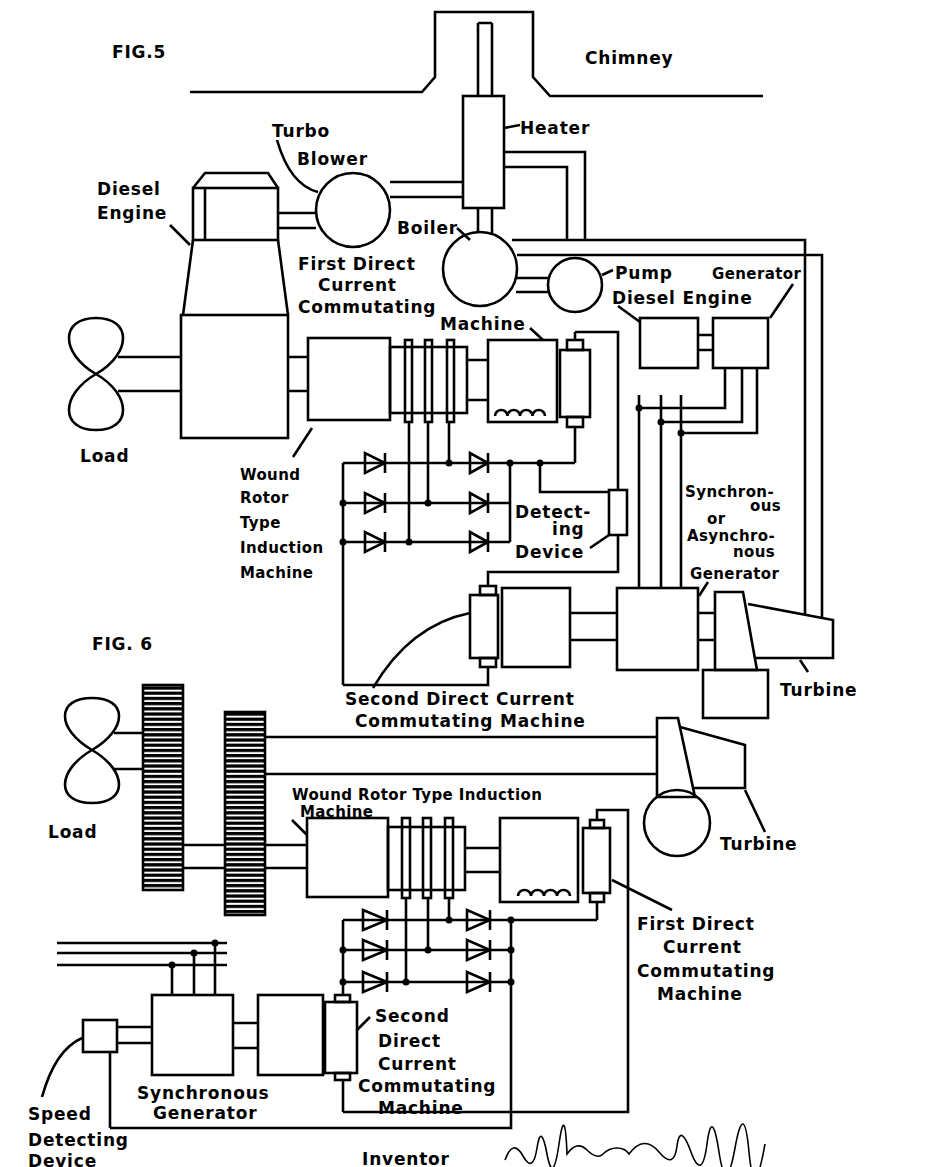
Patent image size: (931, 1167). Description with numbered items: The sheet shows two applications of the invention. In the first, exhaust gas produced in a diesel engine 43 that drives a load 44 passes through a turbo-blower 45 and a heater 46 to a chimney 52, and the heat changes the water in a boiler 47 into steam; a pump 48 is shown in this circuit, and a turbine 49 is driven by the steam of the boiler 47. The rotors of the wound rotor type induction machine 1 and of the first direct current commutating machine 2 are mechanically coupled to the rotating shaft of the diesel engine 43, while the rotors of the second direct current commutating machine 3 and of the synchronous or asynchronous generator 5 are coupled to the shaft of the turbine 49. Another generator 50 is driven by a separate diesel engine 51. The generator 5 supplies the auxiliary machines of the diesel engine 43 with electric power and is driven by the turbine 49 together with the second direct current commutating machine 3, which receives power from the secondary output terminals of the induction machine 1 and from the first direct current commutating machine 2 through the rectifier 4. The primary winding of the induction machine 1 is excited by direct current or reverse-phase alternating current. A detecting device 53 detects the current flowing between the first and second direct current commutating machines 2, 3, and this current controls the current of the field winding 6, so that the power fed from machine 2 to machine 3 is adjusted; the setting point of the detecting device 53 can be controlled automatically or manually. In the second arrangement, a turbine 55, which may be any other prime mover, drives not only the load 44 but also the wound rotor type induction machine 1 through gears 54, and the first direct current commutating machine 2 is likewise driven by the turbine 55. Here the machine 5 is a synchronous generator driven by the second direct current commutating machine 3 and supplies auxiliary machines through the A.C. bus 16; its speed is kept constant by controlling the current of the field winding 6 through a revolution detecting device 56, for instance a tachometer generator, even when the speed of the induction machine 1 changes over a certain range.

In FIG. 5, the wound rotor type induction machine 1 is at (387, 380).
In FIG. 6, the wound rotor type induction machine 1 is at (386, 858).
In FIG. 5, the first direct current commutating machine 2 is at (539, 397).
In FIG. 6, the first direct current commutating machine 2 is at (485, 961).
In FIG. 5, the second direct current commutating machine 3 is at (520, 626).
In FIG. 6, the second direct current commutating machine 3 is at (307, 1053).
In FIG. 5, the rectifier 4 is at (475, 553).
In FIG. 6, the rectifier 4 is at (353, 1013).
In FIG. 5, the synchronous or asynchronous generator 5 is at (657, 629).
In FIG. 6, the synchronous or asynchronous generator 5 is at (192, 1035).
In FIG. 5, the field winding 6 is at (513, 422).
In FIG. 6, the field winding 6 is at (518, 893).
In FIG. 5, the A.C. bus 16 is at (662, 476).
In FIG. 6, the A.C. bus 16 is at (150, 964).
In FIG. 5, the diesel engine 43 is at (234, 305).
In FIG. 5, the load 44 is at (125, 375).
In FIG. 6, the load 44 is at (83, 708).
In FIG. 5, the turbo-blower 45 is at (353, 210).
In FIG. 5, the heater 46 is at (463, 127).
In FIG. 5, the boiler 47 is at (480, 269).
In FIG. 5, the pump 48 is at (575, 285).
In FIG. 5, the turbine 49 is at (768, 655).
In FIG. 5, the generator 50 is at (740, 343).
In FIG. 5, the diesel engine 51 is at (669, 343).
In FIG. 5, the chimney 52 is at (533, 30).
In FIG. 5, the detecting device 53 is at (612, 490).
In FIG. 6, the gears 54 is at (228, 713).
In FIG. 6, the turbine 55 is at (745, 762).
In FIG. 6, the revolution detecting device 56 is at (150, 1077).